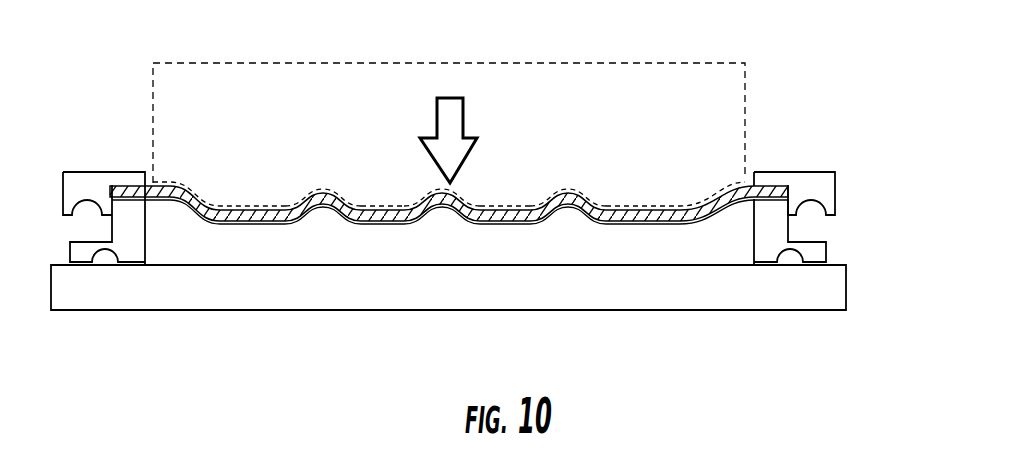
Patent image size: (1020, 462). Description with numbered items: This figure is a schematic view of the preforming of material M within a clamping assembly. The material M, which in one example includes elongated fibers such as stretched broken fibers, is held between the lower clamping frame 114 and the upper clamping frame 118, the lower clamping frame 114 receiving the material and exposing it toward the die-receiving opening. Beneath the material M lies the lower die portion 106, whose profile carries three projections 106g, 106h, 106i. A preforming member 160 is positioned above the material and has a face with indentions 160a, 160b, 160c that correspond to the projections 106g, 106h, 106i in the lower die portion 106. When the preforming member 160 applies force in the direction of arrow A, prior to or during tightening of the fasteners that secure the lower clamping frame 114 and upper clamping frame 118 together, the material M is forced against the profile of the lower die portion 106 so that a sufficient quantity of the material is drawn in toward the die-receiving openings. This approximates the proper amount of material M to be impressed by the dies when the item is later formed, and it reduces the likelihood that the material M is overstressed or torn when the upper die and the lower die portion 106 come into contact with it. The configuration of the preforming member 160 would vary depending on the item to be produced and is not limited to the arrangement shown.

The lower die portion 106 is at (720, 227).
The projection in lower die portion 106g is at (322, 213).
The projection in lower die portion 106h is at (455, 212).
The projection in lower die portion 106i is at (567, 212).
The preforming member 160 is at (703, 62).
The indention 160a is at (347, 187).
The indention 160b is at (465, 185).
The indention 160c is at (578, 188).
The upper clamping frame 118 is at (823, 190).
The lower clamping frame 114 is at (820, 253).
The arrow A is at (440, 127).
The material M is at (150, 185).